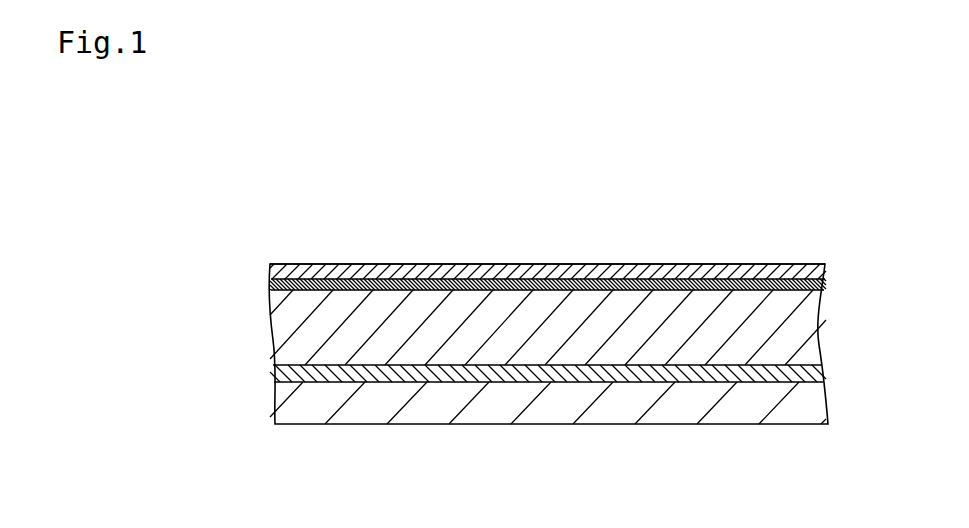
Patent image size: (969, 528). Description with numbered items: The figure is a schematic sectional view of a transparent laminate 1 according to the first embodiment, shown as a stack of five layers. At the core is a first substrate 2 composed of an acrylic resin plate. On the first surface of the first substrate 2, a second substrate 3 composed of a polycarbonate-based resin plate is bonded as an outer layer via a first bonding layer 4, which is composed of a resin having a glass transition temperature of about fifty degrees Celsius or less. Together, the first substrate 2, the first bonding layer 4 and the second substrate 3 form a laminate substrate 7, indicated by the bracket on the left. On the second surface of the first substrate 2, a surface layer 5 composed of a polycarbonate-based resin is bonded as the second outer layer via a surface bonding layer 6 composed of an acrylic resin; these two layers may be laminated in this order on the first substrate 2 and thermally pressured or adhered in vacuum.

The transparent laminate 1 is at (405, 249).
The first substrate 2 is at (297, 332).
The second substrate 3 is at (523, 413).
The first bonding layer 4 is at (297, 378).
The surface layer 5 is at (818, 273).
The surface bonding layer 6 is at (816, 285).
The laminate substrate 7 is at (494, 367).